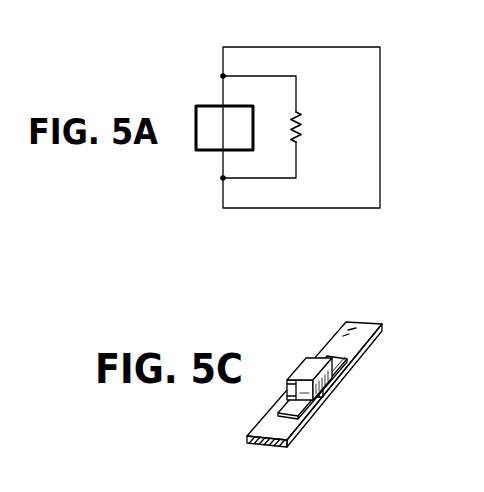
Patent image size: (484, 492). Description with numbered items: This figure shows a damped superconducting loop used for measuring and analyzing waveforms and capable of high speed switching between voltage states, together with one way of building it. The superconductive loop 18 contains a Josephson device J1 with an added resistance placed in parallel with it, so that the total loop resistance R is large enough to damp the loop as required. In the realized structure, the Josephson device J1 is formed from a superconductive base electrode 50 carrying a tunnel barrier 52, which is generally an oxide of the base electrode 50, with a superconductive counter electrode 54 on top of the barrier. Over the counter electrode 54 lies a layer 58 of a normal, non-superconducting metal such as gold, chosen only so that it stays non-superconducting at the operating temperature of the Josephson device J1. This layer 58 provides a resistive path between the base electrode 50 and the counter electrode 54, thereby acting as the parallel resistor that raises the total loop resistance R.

In FIG. 5A, the superconductive loop 18 is at (277, 38).
In FIG. 5C, the superconductive base electrode 50 is at (281, 432).
In FIG. 5C, the tunnel barrier 52 is at (346, 372).
In FIG. 5C, the counter electrode 54 is at (357, 332).
In FIG. 5C, the layer 58 is at (313, 372).
In FIG. 5A, the Josephson device J1 is at (224, 128).
In FIG. 5C, the Josephson device J1 is at (353, 393).
In FIG. 5A, the total loop resistance R is at (307, 127).